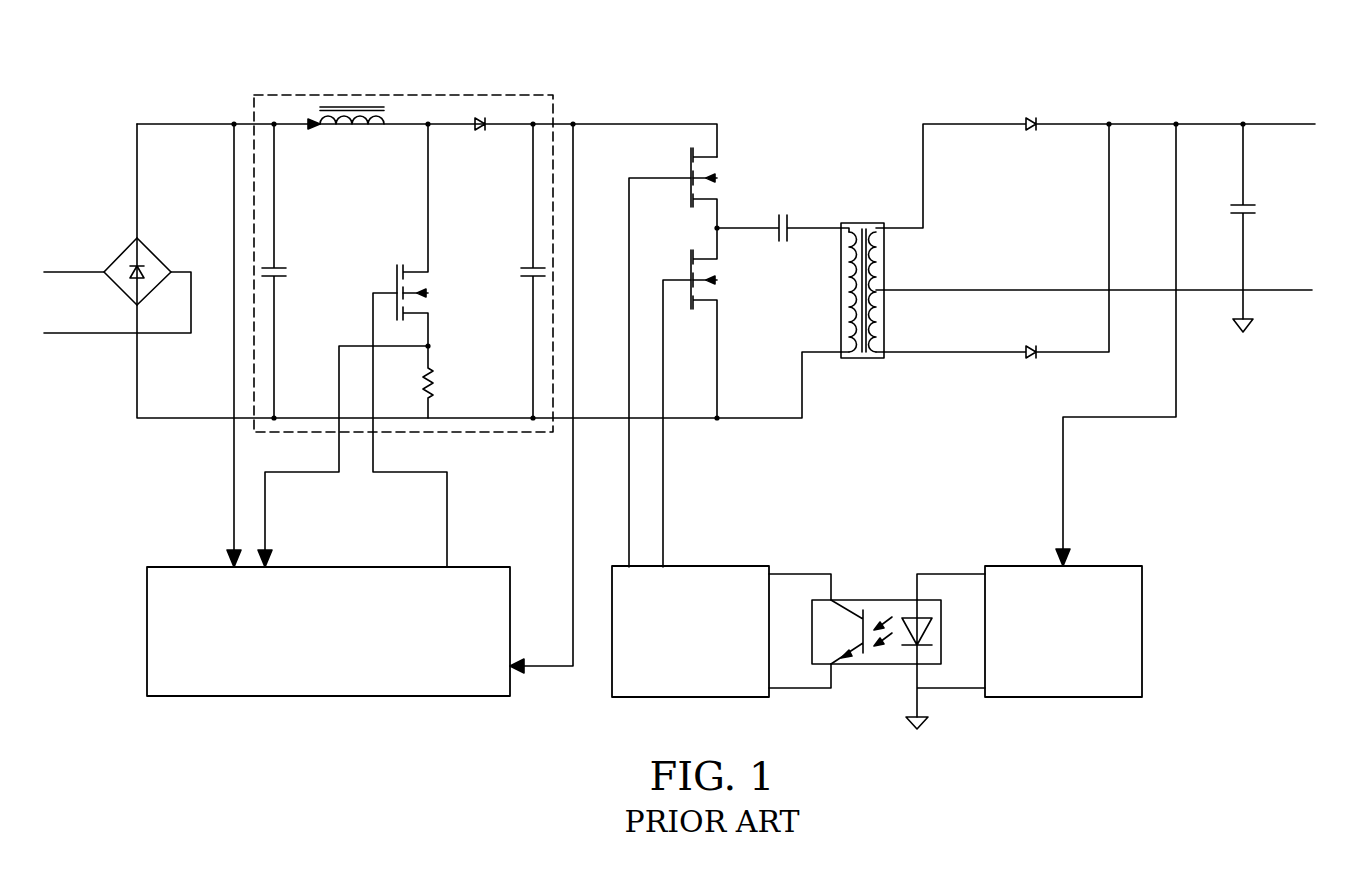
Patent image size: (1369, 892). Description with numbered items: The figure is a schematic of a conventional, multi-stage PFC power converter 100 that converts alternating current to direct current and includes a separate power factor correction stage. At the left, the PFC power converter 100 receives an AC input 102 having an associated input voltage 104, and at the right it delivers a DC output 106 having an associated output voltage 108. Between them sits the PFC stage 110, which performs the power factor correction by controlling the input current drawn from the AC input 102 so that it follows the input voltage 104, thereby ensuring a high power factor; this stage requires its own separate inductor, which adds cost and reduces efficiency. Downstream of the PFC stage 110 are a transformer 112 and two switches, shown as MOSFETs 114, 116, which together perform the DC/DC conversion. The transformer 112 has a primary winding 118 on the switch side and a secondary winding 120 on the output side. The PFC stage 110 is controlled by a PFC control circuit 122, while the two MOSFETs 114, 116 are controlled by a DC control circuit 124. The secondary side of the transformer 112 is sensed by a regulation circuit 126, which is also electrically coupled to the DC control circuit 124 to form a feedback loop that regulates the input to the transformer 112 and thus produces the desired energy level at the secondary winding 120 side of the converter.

The PFC power converter 100 is at (84, 87).
The AC input 102 is at (71, 311).
The input voltage 104 is at (58, 228).
The DC output 106 is at (1331, 197).
The output voltage 108 is at (1323, 113).
The PFC stage 110 is at (553, 95).
The transformer 112 is at (868, 223).
The MOSFET 114 is at (688, 170).
The MOSFET 116 is at (688, 272).
The primary winding 118 is at (848, 287).
The secondary winding 120 is at (875, 319).
The PFC control circuit 122 is at (335, 623).
The DC control circuit 124 is at (721, 631).
The regulation circuit 126 is at (1041, 426).